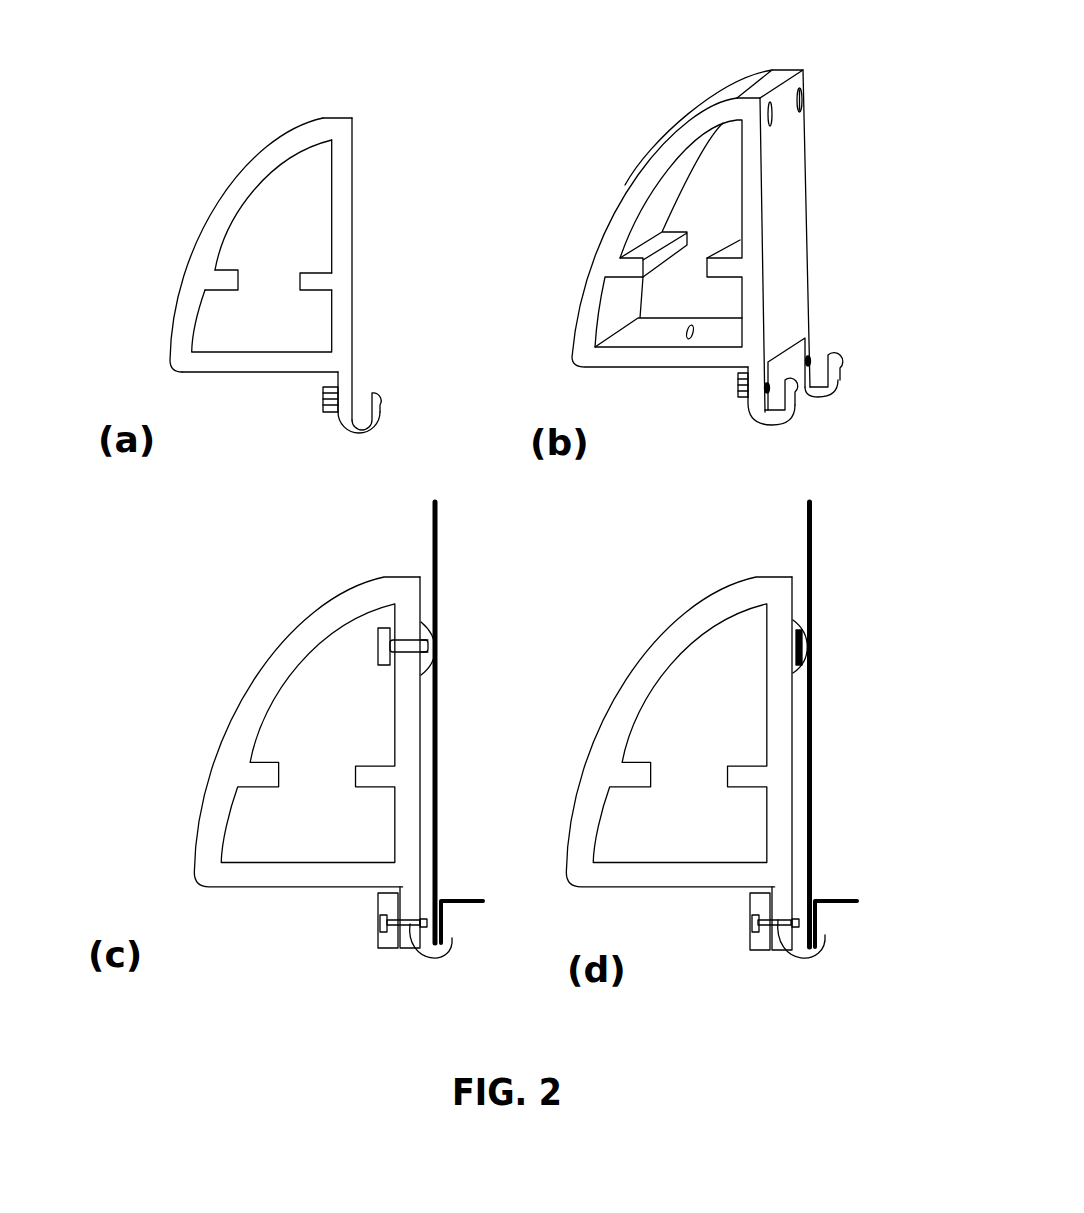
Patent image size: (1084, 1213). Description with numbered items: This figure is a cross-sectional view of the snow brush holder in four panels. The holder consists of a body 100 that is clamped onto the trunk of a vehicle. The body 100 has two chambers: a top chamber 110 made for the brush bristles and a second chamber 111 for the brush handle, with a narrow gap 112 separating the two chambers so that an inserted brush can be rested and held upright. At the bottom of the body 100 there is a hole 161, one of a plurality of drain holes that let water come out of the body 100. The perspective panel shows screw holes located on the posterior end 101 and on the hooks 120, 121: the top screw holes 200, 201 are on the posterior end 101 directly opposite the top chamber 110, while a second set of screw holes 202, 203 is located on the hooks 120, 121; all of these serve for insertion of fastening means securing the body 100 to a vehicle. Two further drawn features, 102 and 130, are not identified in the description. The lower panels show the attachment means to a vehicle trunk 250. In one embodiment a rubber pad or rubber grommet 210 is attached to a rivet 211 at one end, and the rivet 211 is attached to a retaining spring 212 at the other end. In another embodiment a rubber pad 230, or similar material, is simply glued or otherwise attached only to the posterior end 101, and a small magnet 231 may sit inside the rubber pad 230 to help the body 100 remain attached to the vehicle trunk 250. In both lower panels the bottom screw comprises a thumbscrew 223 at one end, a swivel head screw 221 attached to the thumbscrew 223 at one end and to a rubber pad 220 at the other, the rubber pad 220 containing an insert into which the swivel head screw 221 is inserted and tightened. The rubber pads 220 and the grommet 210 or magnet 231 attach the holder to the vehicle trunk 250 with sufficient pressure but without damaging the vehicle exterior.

The body 100 is at (350, 110).
The posterior end 101 is at (357, 297).
The curved surface 102 is at (210, 213).
The top chamber 110 is at (318, 182).
The second chamber 111 is at (308, 330).
The narrow gap 112 is at (270, 277).
The hook 120 is at (367, 428).
The hook 121 is at (823, 390).
The nut 130 is at (323, 400).
The hole 161 is at (683, 340).
The top screw hole 200 is at (803, 95).
The top screw hole 201 is at (772, 117).
The screw hole 202 is at (767, 388).
The screw hole 203 is at (808, 362).
The rubber grommet 210 is at (428, 632).
The rivet 211 is at (407, 647).
The retaining spring 212 is at (380, 647).
The rubber pad 220 is at (420, 950).
The swivel head screw 221 is at (403, 937).
The thumbscrew 223 is at (385, 948).
The rubber pad 230 is at (805, 655).
The magnet 231 is at (803, 640).
The vehicle trunk 250 is at (438, 743).